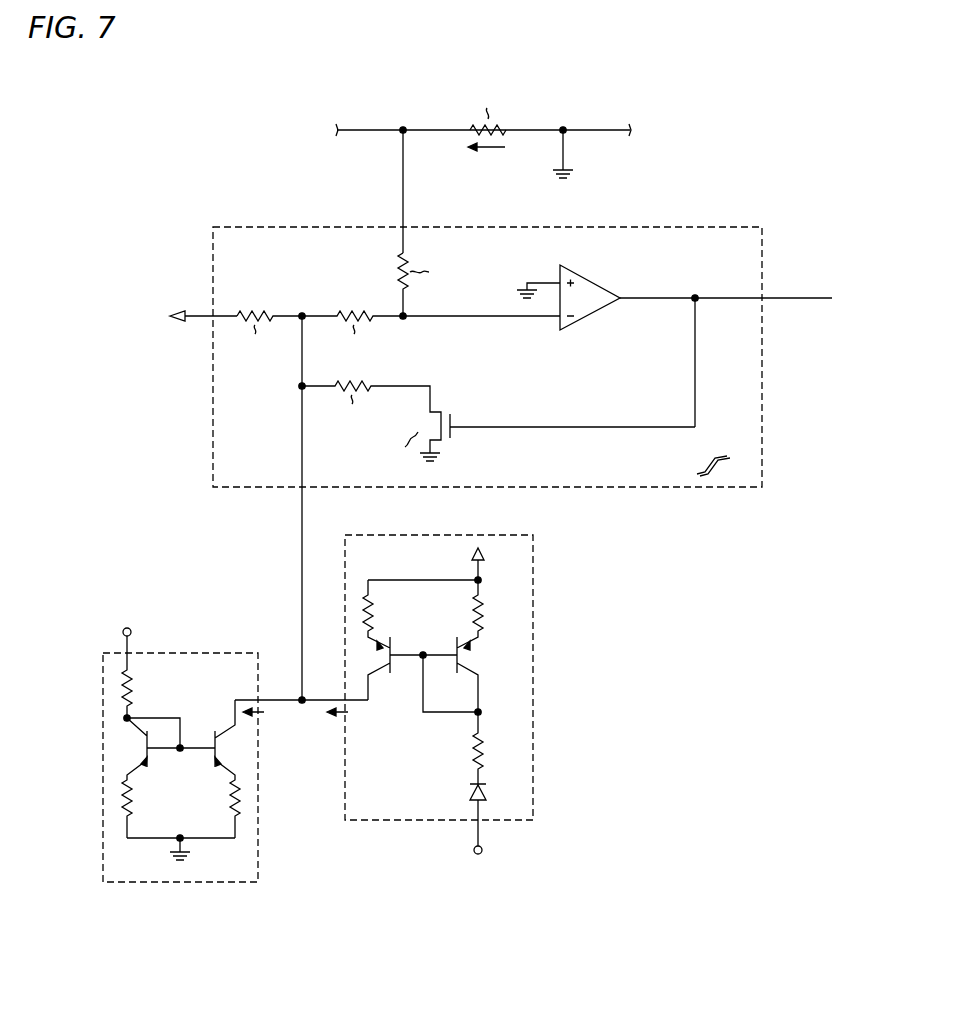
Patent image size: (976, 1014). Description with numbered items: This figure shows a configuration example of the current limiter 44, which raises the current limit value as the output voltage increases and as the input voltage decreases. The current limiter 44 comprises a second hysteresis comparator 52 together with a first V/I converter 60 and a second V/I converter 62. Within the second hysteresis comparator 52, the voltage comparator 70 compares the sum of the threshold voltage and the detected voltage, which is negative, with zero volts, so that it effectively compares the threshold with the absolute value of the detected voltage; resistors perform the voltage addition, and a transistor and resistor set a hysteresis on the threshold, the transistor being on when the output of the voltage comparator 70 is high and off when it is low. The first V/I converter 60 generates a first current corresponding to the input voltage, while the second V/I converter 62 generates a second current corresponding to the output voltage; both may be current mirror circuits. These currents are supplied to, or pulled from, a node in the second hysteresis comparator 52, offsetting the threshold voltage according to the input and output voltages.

The current limiter 44 is at (642, 971).
The second hysteresis comparator 52 is at (762, 371).
The first V/I converter 60 is at (155, 882).
The second V/I converter 62 is at (533, 700).
The voltage comparator 70 is at (590, 276).